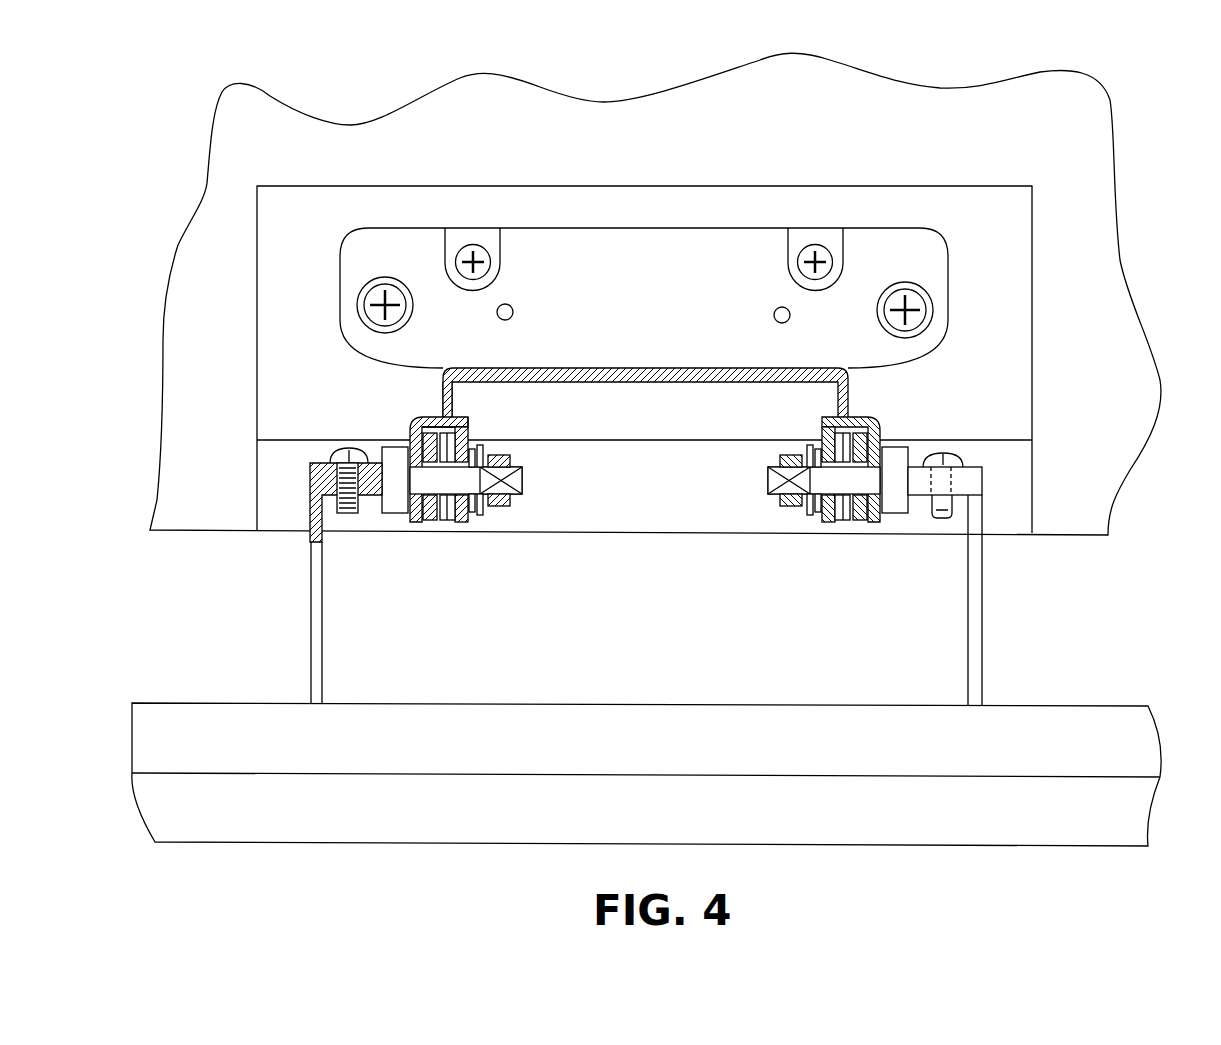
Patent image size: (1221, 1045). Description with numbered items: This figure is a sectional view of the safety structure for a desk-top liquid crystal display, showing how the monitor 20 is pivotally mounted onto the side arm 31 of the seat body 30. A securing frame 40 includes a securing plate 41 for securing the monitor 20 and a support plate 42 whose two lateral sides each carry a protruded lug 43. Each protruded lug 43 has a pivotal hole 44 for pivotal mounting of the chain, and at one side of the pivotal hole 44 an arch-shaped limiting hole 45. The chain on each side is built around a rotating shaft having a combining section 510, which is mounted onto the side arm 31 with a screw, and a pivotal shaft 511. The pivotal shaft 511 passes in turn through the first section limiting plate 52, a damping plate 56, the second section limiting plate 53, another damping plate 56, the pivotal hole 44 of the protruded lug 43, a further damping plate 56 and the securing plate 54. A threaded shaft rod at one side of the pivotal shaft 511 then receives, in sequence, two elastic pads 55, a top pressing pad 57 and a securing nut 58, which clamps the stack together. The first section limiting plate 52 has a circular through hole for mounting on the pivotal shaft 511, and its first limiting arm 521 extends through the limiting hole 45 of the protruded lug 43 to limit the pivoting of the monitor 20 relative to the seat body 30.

The monitor 20 is at (1065, 162).
The seat body 30 is at (200, 715).
The side arm 31 is at (316, 610).
The securing frame 40 is at (745, 207).
The securing plate 41 is at (620, 257).
The support plate 42 is at (655, 362).
The protruded lug 43 is at (440, 385).
The pivotal hole 44 is at (443, 513).
The limiting hole 45 is at (447, 418).
The first section limiting plate 52 is at (410, 515).
The second section limiting plate 53 is at (433, 518).
The securing plate 54 is at (460, 513).
The elastic pad 55 is at (473, 513).
The damping plate 56 is at (427, 518).
The top pressing pad 57 is at (487, 506).
The securing nut 58 is at (497, 456).
The combining section 510 is at (322, 455).
The pivotal shaft 511 is at (427, 473).
The first limiting arm 521 is at (468, 420).